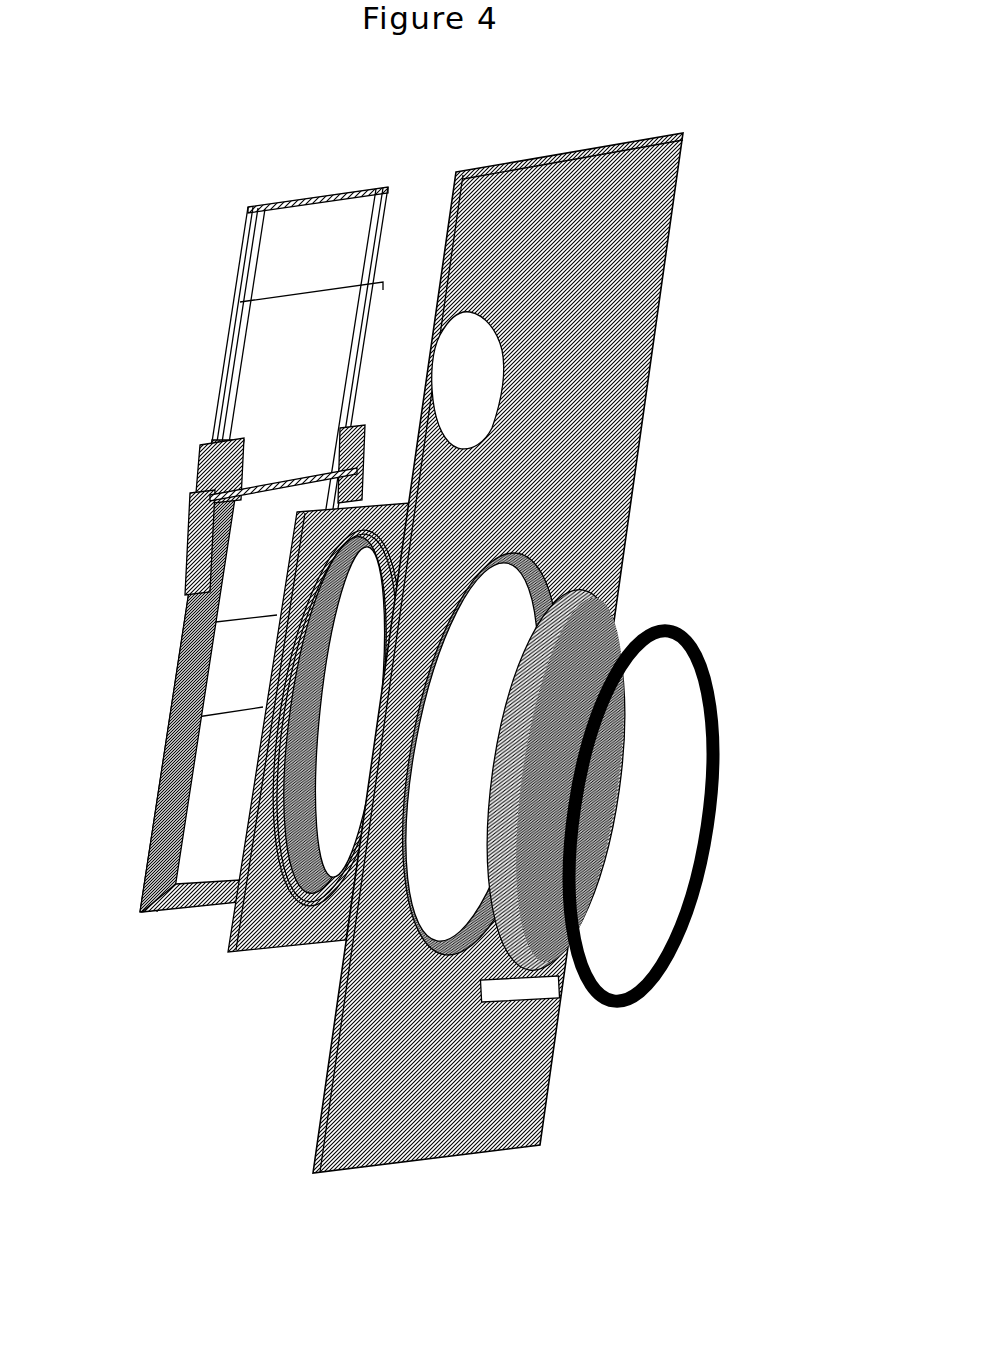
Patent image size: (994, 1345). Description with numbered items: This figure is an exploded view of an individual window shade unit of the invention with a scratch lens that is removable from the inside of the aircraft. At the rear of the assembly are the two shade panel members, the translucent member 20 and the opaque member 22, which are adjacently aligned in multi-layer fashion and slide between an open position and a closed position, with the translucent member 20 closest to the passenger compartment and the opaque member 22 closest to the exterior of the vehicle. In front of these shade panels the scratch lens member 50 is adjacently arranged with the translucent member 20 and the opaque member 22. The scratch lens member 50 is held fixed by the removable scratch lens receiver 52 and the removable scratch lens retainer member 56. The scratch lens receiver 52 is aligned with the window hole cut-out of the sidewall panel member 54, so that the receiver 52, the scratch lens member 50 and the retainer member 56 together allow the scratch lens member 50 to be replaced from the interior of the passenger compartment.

The translucent member 20 is at (227, 357).
The opaque member 22 is at (237, 268).
The scratch lens member 50 is at (631, 630).
The scratch lens receiver 52 is at (230, 922).
The sidewall panel member 54 is at (632, 510).
The scratch lens retainer member 56 is at (710, 785).